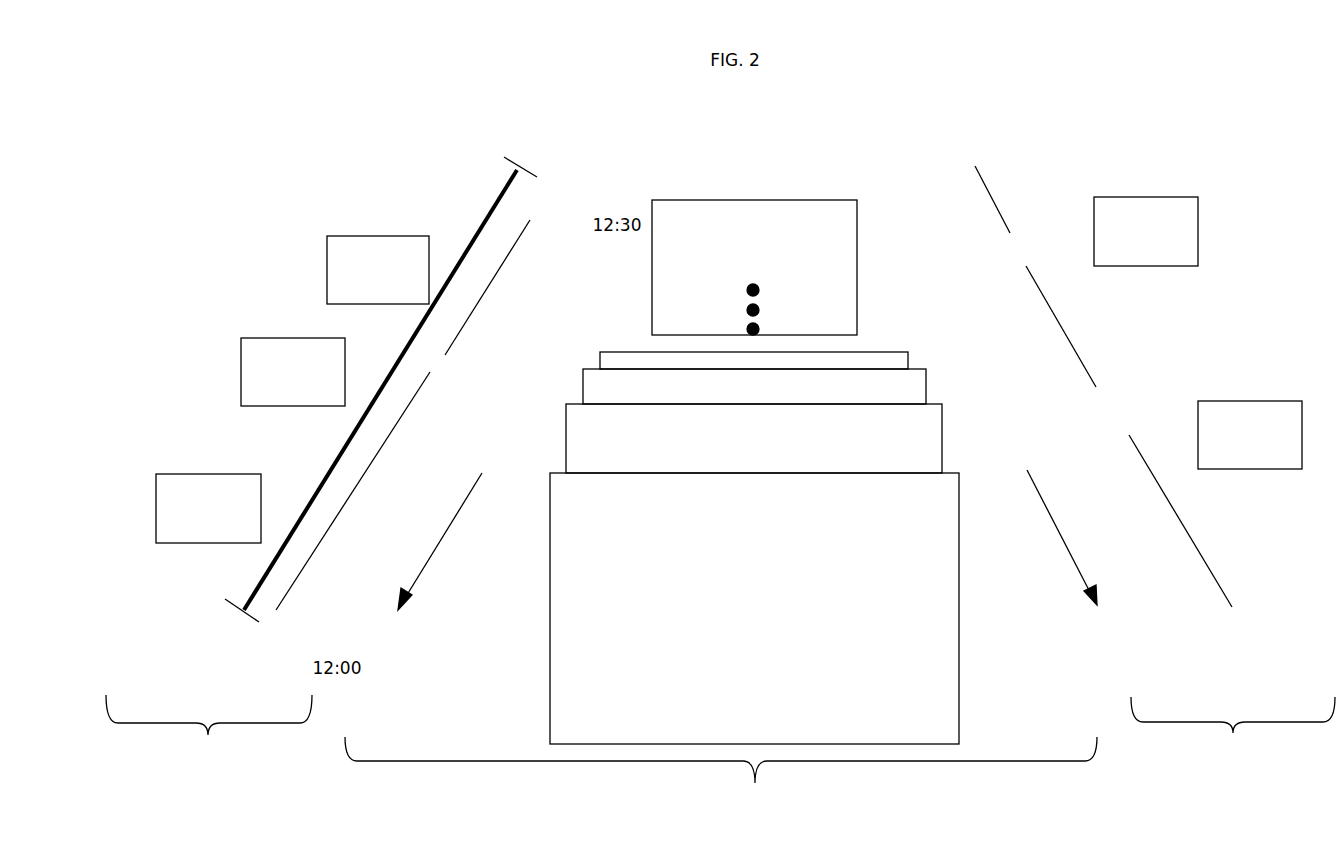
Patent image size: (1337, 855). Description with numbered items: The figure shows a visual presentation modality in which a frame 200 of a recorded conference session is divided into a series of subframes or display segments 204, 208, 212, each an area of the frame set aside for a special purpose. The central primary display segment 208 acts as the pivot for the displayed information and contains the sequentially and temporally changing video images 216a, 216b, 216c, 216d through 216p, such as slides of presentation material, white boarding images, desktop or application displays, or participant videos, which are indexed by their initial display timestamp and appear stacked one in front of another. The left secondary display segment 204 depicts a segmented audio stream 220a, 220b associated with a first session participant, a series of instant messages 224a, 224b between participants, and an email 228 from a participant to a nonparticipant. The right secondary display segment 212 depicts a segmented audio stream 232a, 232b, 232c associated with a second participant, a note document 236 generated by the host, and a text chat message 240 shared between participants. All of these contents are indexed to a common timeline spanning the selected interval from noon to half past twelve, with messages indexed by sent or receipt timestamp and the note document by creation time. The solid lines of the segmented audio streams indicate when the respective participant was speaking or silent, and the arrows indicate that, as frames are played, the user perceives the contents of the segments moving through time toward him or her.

The frame 200 is at (886, 60).
The secondary display segment 204 is at (209, 731).
The primary display segment 208 is at (721, 772).
The secondary display segment 212 is at (1233, 730).
The video image 216a is at (778, 608).
The video image 216b is at (782, 416).
The video image 216c is at (773, 361).
The video image 216d is at (762, 334).
The video image 216p is at (754, 242).
The segmented audio stream 220a is at (363, 491).
The segmented audio stream 220b is at (516, 287).
The instant message 224a is at (208, 483).
The instant message 224b is at (389, 244).
The email 228 is at (293, 347).
The segmented audio stream 232a is at (1195, 521).
The segmented audio stream 232b is at (1080, 326).
The segmented audio stream 232c is at (1011, 194).
The note document 236 is at (1257, 409).
The text chat message 240 is at (736, 369).